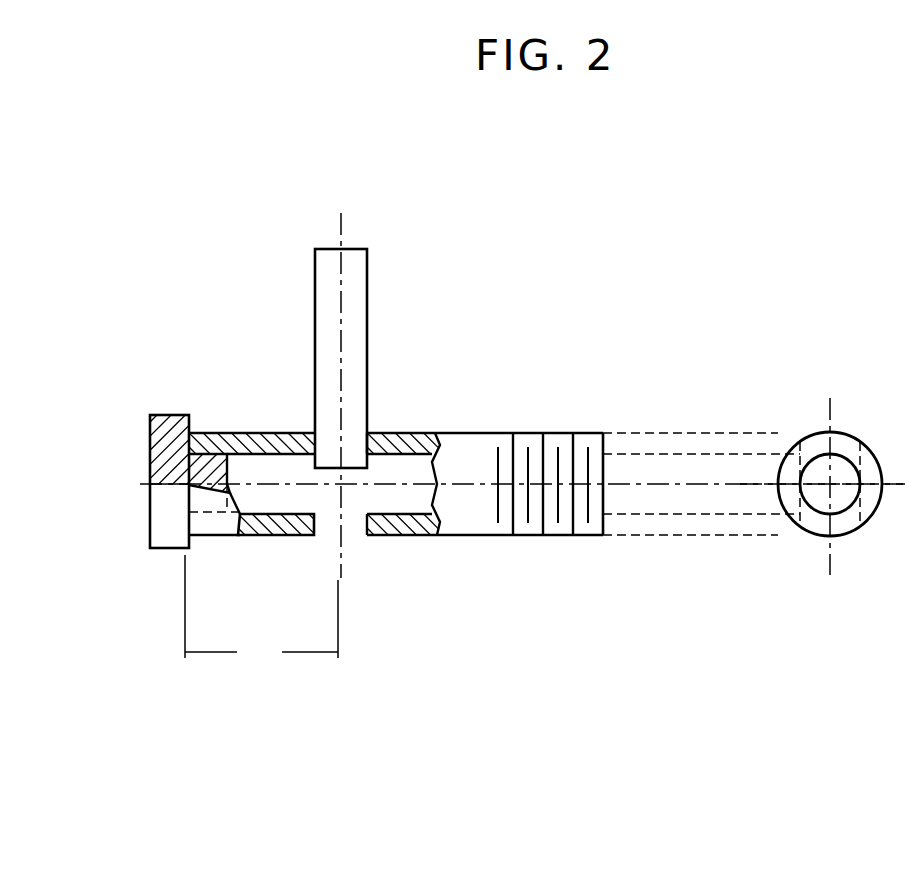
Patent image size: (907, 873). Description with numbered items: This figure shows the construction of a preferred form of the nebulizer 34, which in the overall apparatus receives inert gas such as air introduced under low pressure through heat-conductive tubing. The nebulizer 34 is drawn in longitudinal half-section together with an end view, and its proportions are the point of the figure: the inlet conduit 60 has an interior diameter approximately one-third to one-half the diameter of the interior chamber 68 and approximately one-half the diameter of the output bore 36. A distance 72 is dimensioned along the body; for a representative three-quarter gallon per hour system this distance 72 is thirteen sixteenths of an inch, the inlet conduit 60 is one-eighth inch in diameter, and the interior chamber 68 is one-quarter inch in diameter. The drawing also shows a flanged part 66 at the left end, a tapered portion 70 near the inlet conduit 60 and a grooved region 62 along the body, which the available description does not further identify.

The nebulizer 34 is at (671, 295).
The output bore 36 is at (350, 537).
The inlet conduit 60 is at (367, 316).
The grooves 62 is at (527, 536).
The flange 66 is at (148, 505).
The interior chamber 68 is at (283, 498).
The tapered tip 70 is at (226, 490).
The distance 72 is at (258, 652).